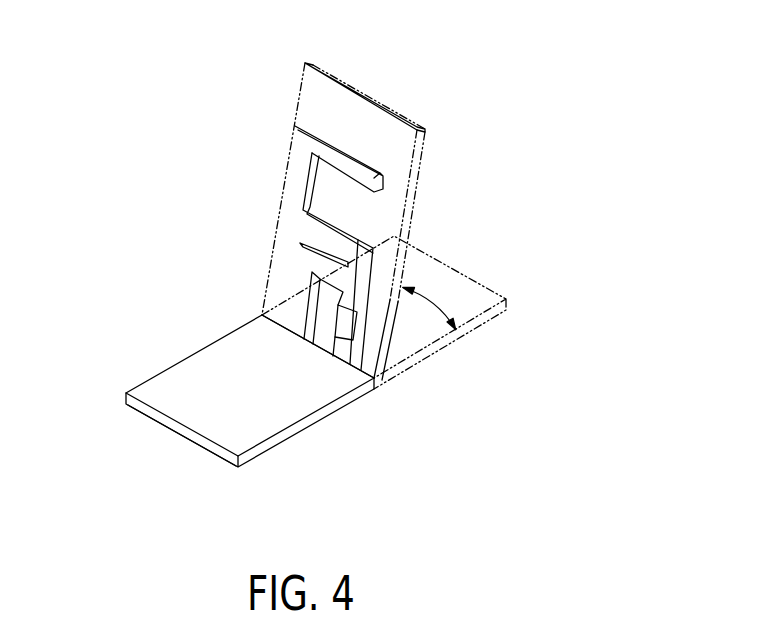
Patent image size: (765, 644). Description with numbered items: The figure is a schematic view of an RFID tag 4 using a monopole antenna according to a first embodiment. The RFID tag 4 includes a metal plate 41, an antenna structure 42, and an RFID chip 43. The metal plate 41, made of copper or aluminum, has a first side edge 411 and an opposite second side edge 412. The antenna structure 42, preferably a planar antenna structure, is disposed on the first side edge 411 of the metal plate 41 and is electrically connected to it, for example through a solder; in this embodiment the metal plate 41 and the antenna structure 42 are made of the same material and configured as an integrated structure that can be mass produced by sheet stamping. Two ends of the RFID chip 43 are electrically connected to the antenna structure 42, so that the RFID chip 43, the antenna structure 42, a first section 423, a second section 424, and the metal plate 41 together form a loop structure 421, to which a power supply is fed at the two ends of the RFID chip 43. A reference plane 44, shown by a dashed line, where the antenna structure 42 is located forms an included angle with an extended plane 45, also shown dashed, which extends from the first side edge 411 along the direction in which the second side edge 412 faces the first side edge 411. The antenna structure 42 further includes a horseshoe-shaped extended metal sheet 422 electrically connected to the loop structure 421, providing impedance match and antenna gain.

The RFID tag 4 is at (162, 125).
The metal plate 41 is at (205, 365).
The first side edge 411 is at (318, 350).
The second side edge 412 is at (190, 432).
The antenna structure 42 is at (293, 219).
The loop structure 421 is at (295, 277).
The extended metal sheet 422 is at (340, 163).
The first section 423 is at (293, 320).
The second section 424 is at (350, 348).
The RFID chip 43 is at (345, 322).
The reference plane 44 is at (397, 104).
The extended plane 45 is at (460, 275).